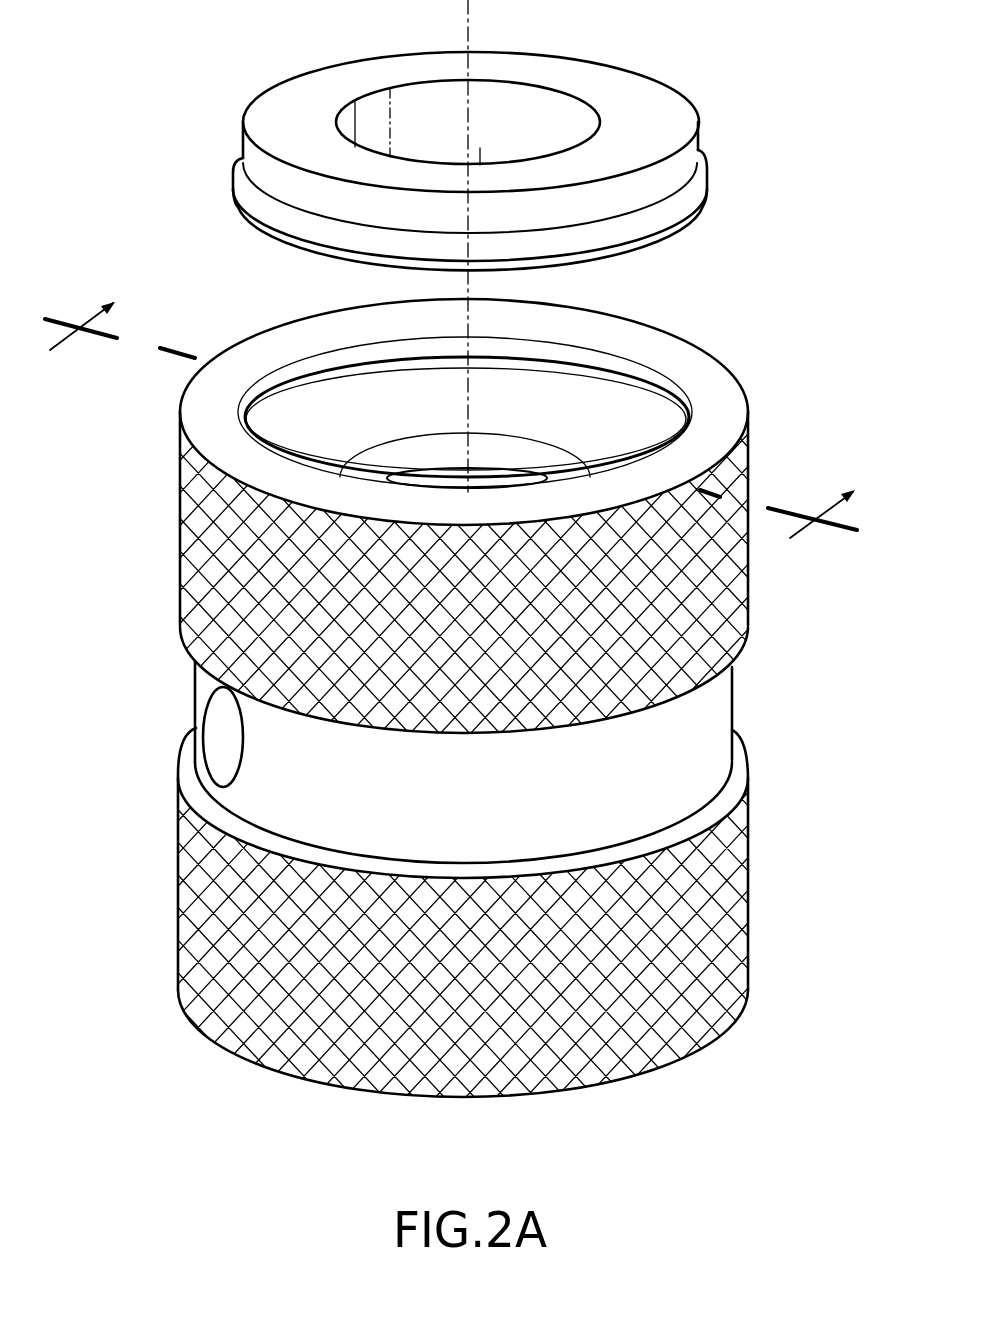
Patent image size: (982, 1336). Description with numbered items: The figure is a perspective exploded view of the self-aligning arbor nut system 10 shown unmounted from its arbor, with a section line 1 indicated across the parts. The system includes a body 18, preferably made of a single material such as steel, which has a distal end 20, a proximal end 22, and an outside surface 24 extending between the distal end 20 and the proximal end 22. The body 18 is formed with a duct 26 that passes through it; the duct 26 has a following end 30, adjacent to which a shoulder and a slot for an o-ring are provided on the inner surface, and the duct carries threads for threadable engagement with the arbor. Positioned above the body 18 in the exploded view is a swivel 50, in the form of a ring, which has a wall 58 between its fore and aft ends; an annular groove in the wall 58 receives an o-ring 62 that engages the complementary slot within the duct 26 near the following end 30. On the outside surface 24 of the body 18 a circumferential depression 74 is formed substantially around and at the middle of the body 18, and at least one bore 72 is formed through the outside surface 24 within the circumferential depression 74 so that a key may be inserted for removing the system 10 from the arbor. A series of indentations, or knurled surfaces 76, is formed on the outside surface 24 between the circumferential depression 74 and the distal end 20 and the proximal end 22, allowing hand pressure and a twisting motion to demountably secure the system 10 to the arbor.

The section line 1- 1 is at (451, 426).
The self-aligning arbor nut system 10 is at (138, 212).
The body 18 is at (747, 588).
The distal end 20 is at (360, 1090).
The proximal end 22 is at (738, 372).
The outside surface 24 is at (180, 507).
The duct 26 is at (660, 430).
The following end 30 is at (262, 394).
The swivel 50 is at (663, 103).
The wall 58 is at (693, 143).
The o-ring 62 is at (693, 188).
The bore 72 is at (215, 717).
The circumferential depression 74 is at (732, 698).
The knurled surfaces 76 is at (727, 908).